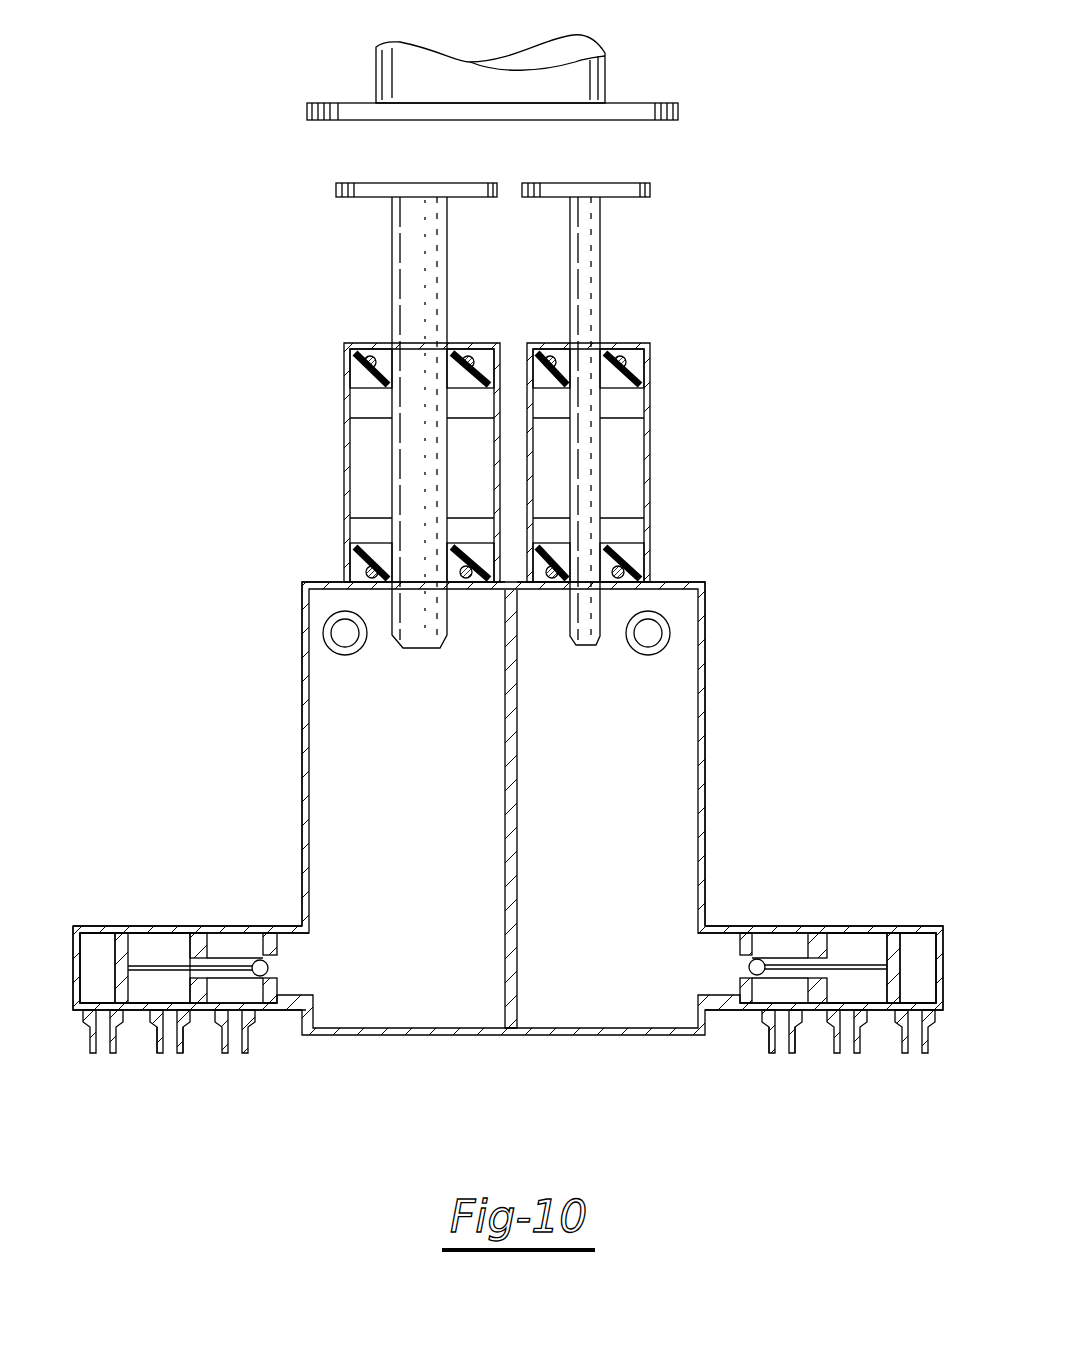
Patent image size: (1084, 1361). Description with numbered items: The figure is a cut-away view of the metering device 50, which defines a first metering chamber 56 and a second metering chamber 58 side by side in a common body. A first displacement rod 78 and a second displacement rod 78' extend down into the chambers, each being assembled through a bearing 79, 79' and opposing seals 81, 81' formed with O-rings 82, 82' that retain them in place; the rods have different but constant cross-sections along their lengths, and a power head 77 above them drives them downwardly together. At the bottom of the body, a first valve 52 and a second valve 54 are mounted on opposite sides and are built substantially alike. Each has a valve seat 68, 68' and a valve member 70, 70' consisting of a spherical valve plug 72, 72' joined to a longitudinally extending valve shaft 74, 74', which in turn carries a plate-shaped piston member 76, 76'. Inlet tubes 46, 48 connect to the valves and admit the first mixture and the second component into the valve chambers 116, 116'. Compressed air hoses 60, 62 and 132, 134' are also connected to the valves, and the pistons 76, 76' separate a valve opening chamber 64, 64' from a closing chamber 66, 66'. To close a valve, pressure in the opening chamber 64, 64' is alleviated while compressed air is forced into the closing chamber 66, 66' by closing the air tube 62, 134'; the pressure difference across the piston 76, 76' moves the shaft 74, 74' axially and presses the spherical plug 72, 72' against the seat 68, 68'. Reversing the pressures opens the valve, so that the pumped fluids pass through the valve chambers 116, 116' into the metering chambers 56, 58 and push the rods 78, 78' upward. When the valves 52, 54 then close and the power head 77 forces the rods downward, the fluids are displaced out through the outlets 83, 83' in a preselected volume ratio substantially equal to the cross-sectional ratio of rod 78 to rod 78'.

The power head 77 is at (603, 72).
The first displacement rod 78 is at (398, 415).
The second displacement rod 78' is at (598, 414).
The bearing 79 is at (367, 462).
The bearing 79' is at (627, 462).
The seal 81 is at (366, 467).
The seal 81' is at (634, 459).
The O-ring 82 is at (370, 458).
The O-ring 82' is at (650, 435).
The outlet 83 is at (292, 626).
The outlet 83' is at (702, 627).
The metering device 50 is at (710, 752).
The first metering chamber 56 is at (342, 705).
The second metering chamber 58 is at (678, 800).
The first valve 52 is at (157, 938).
The second valve 54 is at (828, 932).
The closing chamber 66 is at (96, 930).
The closing chamber 66' is at (922, 944).
The piston member 76 is at (115, 943).
The piston member 76' is at (882, 1017).
The valve opening chamber 64 is at (166, 928).
The valve opening chamber 64' is at (870, 931).
The valve chamber 116 is at (230, 906).
The valve chamber 116' is at (829, 928).
The valve shaft 74 is at (235, 931).
The valve shaft 74' is at (781, 901).
The valve seat 68 is at (272, 927).
The valve seat 68' is at (755, 931).
The spherical valve plug 72 is at (239, 958).
The spherical valve plug 72' is at (766, 968).
The compressed air tube 62 is at (120, 1042).
The compressed air hose 60 is at (187, 1043).
The inlet tube 46 is at (252, 1040).
The inlet tube 48 is at (766, 1040).
The compressed air hose 132 is at (836, 1040).
The compressed air tube 134' is at (923, 1066).
The valve member 70 is at (160, 1048).
The valve member 70' is at (781, 1041).